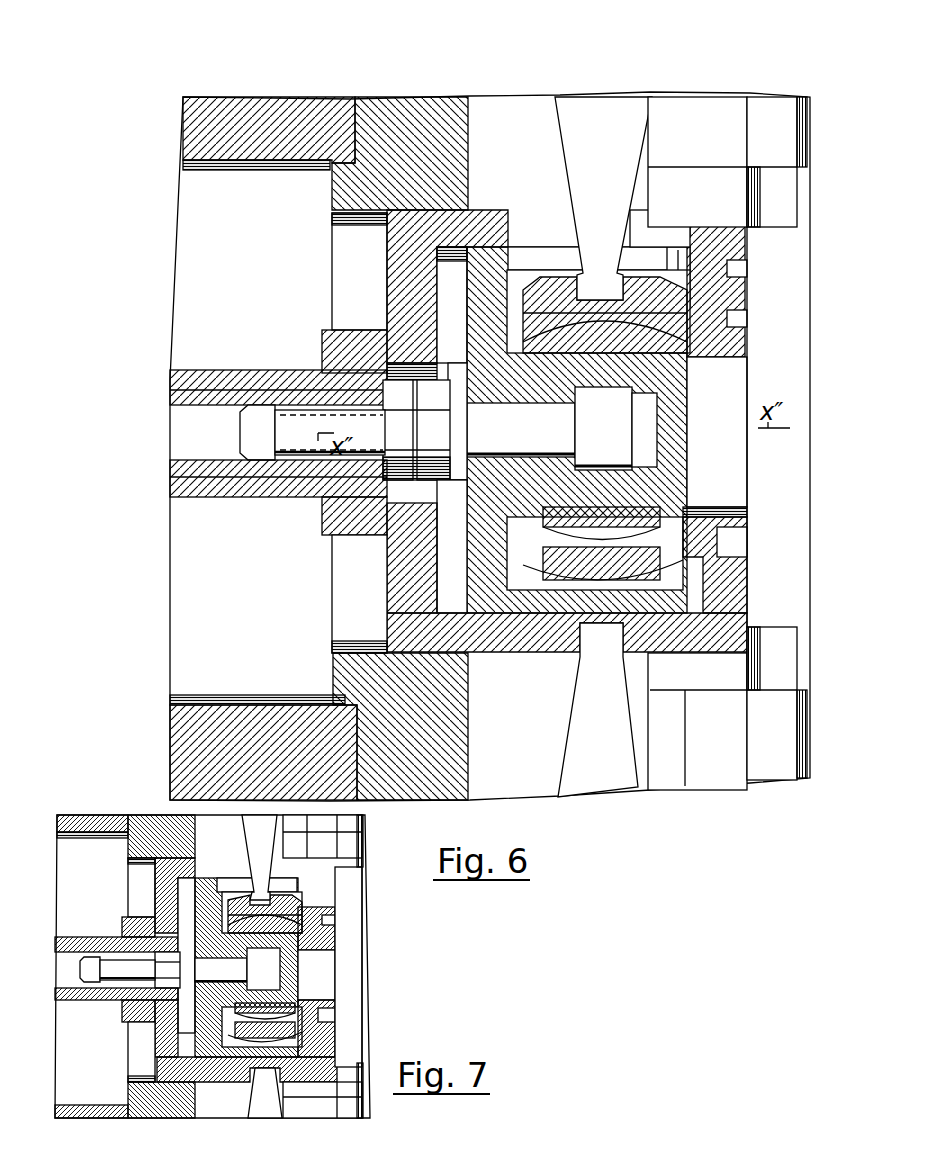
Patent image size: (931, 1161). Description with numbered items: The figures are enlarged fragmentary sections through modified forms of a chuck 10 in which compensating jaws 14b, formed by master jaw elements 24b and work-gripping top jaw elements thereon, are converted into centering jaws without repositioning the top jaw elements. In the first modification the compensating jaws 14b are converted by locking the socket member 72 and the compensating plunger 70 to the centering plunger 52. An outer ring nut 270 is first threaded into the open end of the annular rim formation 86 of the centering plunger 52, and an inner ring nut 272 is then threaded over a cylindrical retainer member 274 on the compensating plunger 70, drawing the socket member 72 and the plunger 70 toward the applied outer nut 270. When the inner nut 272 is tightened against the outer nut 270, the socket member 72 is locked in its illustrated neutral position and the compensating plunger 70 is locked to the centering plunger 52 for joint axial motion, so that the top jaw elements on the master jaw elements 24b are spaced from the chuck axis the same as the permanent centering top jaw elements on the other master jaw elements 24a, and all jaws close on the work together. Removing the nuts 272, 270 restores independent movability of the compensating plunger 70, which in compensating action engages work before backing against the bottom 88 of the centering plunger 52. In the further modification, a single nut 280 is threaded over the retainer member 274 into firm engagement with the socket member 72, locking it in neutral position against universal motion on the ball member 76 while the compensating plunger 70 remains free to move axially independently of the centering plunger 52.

In FIG. 6, the chuck 10 is at (689, 72).
In FIG. 7, the chuck 10 is at (391, 846).
In FIG. 6, the master jaw elements 24b is at (722, 104).
In FIG. 6, the compensating jaws 14b is at (775, 104).
In FIG. 6, the annular rim formation 86 is at (704, 222).
In FIG. 6, the socket member 72 is at (533, 313).
In FIG. 7, the socket member 72 is at (314, 900).
In FIG. 6, the bottom 88 is at (400, 286).
In FIG. 6, the outer ring nut 270 is at (739, 287).
In FIG. 6, the inner ring nut 272 is at (741, 333).
In FIG. 6, the retainer member 274 is at (714, 512).
In FIG. 7, the retainer member 274 is at (311, 1007).
In FIG. 6, the centering plunger 52 is at (411, 592).
In FIG. 7, the centering plunger 52 is at (167, 1041).
In FIG. 6, the compensating plunger 70 is at (578, 454).
In FIG. 7, the compensating plunger 70 is at (311, 988).
In FIG. 6, the master jaw elements 24a is at (710, 775).
In FIG. 7, the single nut 280 is at (323, 913).
In FIG. 7, the ball member 76 is at (309, 955).